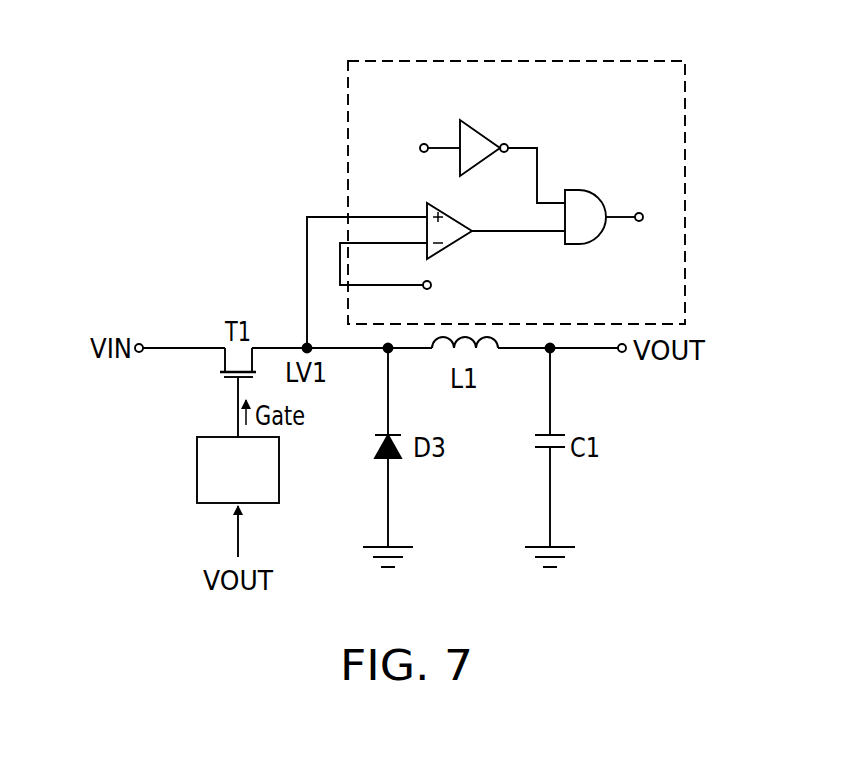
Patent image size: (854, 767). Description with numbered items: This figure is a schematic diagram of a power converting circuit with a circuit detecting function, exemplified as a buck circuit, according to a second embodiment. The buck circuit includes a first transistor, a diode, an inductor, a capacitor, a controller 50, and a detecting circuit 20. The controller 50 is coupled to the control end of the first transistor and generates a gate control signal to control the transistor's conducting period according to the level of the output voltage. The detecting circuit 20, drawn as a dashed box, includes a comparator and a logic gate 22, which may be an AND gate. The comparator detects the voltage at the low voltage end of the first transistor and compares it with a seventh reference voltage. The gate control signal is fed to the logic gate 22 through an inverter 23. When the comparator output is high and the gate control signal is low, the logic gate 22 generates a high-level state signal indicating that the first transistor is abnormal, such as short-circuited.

The detecting circuit 20 is at (668, 61).
The logic gate 22 is at (588, 182).
The inverter 23 is at (499, 121).
The controller 50 is at (197, 470).